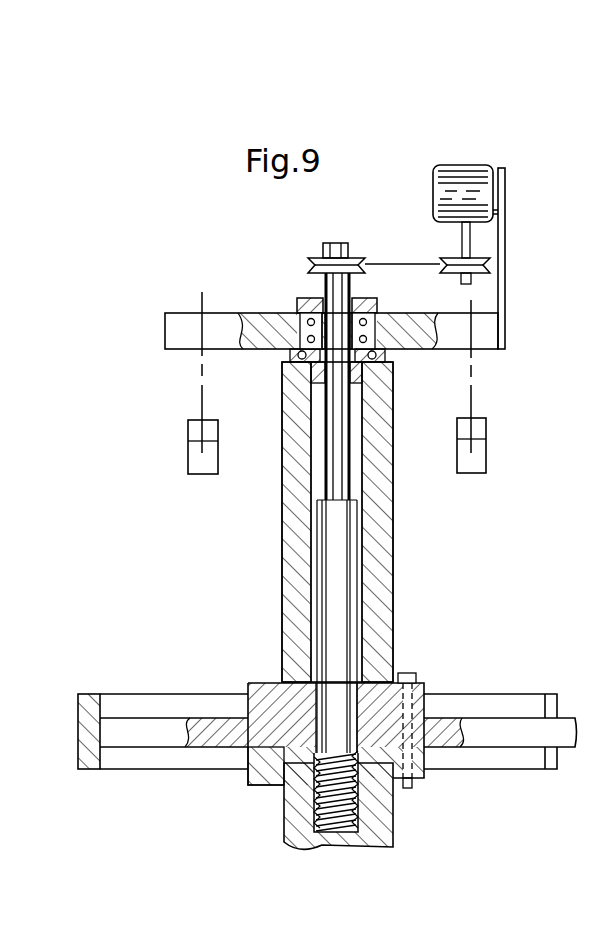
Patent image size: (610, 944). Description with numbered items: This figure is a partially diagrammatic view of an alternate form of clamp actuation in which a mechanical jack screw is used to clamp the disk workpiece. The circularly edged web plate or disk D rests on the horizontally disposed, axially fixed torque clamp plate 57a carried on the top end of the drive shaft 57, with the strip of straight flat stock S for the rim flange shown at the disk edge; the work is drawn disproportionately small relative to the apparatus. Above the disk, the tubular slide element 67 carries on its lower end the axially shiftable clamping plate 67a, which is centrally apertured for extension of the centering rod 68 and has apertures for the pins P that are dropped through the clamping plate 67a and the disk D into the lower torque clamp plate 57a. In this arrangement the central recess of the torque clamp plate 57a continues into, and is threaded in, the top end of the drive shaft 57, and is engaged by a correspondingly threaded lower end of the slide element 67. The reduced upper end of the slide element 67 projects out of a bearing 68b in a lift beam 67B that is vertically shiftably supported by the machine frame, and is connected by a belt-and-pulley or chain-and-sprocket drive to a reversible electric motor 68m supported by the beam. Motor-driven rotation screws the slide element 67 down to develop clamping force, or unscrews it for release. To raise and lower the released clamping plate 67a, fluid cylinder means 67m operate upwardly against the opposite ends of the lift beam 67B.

The reversible electric motor 68m is at (465, 165).
The lift beam 67B is at (183, 308).
The bearing 68b is at (300, 298).
The fluid cylinder means 67m is at (190, 455).
The tubular slide element 67 is at (279, 579).
The centering rod 68 is at (340, 586).
The clamping plate 67a is at (415, 681).
The torque clamp plate 57a is at (247, 784).
The drive shaft 57 is at (394, 796).
The web plate or disk D is at (137, 706).
The strip of straight flat stock S is at (88, 690).
The pins P is at (412, 672).